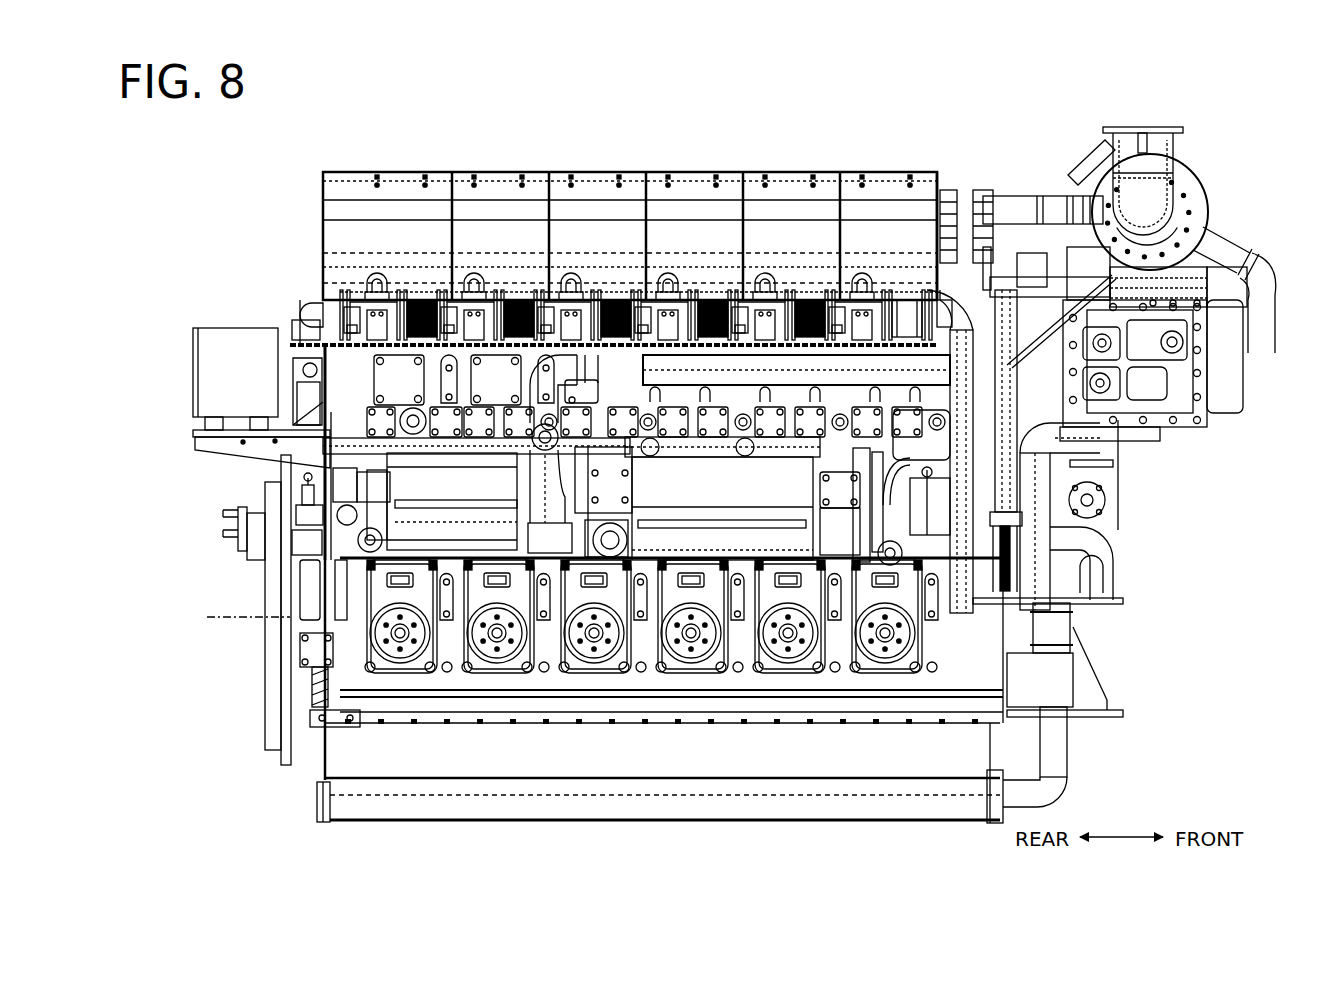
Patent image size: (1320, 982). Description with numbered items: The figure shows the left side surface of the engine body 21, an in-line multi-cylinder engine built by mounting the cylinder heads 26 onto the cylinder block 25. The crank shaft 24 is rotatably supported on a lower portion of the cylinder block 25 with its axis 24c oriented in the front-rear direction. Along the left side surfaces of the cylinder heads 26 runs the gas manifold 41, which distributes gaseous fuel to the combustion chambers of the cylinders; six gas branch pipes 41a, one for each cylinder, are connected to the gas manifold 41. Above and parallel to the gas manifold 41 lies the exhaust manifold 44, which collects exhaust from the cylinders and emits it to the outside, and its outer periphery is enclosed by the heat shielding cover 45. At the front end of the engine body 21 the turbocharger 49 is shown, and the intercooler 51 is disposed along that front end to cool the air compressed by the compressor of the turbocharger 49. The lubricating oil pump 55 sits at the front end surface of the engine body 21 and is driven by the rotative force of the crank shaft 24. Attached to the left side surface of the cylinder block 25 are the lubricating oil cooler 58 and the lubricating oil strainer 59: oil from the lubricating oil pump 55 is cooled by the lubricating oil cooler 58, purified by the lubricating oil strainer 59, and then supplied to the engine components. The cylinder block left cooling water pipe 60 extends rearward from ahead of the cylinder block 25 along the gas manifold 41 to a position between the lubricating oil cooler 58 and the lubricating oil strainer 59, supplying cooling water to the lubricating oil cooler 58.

The engine body 21 is at (1208, 716).
The crank shaft 24 is at (287, 703).
The axis 24c is at (258, 616).
The cylinder block 25 is at (318, 417).
The cylinder heads 26 is at (595, 285).
The gas manifold 41 is at (340, 292).
The gas branch pipes 41a is at (465, 268).
The exhaust manifold 44 is at (406, 172).
The heat shielding cover 45 is at (585, 172).
The turbocharger 49 is at (1197, 200).
The intercooler 51 is at (1216, 400).
The lubricating oil pump 55 is at (1093, 680).
The lubricating oil cooler 58 is at (712, 500).
The lubricating oil strainer 59 is at (455, 487).
The cylinder block left cooling water pipe 60 is at (748, 360).